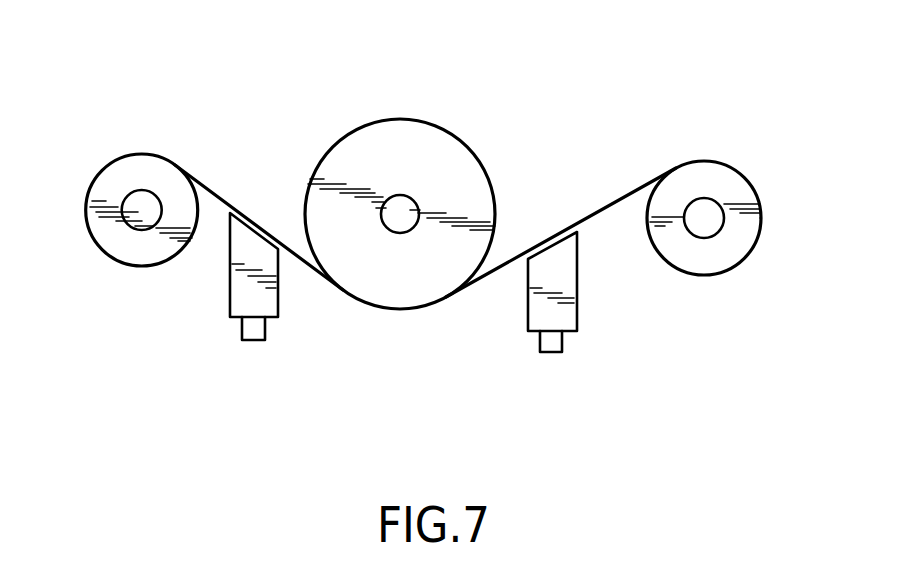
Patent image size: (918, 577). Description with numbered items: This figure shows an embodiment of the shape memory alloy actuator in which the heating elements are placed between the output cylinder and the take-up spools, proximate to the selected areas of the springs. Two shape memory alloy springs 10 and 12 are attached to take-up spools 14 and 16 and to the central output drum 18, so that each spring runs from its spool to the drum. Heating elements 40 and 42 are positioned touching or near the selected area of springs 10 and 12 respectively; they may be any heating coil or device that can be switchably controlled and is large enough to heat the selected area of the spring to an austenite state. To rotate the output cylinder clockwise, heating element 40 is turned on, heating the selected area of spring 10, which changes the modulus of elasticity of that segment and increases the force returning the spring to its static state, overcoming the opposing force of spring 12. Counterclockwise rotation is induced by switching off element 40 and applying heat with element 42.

The shape memory alloy spring 10 is at (215, 193).
The shape memory alloy spring 12 is at (622, 197).
The take-up spool 14 is at (118, 247).
The take-up spool 16 is at (720, 253).
The output drum 18 is at (430, 145).
The heating element 40 is at (227, 302).
The heating element 42 is at (527, 313).